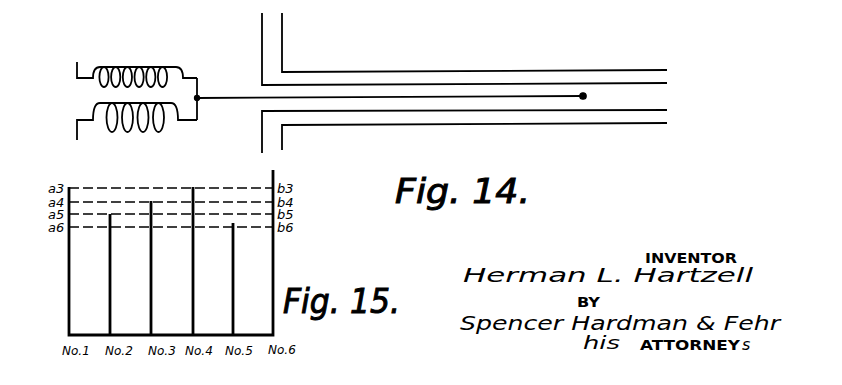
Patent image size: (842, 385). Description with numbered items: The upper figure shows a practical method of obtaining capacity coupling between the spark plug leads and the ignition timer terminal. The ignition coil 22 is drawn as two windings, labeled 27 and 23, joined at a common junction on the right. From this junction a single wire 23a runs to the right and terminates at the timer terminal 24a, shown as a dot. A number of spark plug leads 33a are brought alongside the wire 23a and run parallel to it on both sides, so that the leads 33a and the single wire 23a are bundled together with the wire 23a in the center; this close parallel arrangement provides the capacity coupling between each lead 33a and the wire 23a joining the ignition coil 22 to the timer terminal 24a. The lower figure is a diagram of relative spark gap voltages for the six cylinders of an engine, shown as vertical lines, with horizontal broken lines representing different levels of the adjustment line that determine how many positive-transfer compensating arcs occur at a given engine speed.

The ignition coil 22 is at (62, 116).
The primary winding 27 is at (129, 66).
The secondary winding 23 is at (131, 131).
The wire 23a is at (233, 100).
The timer terminal 24a is at (583, 96).
The spark plug leads 33a is at (262, 29).